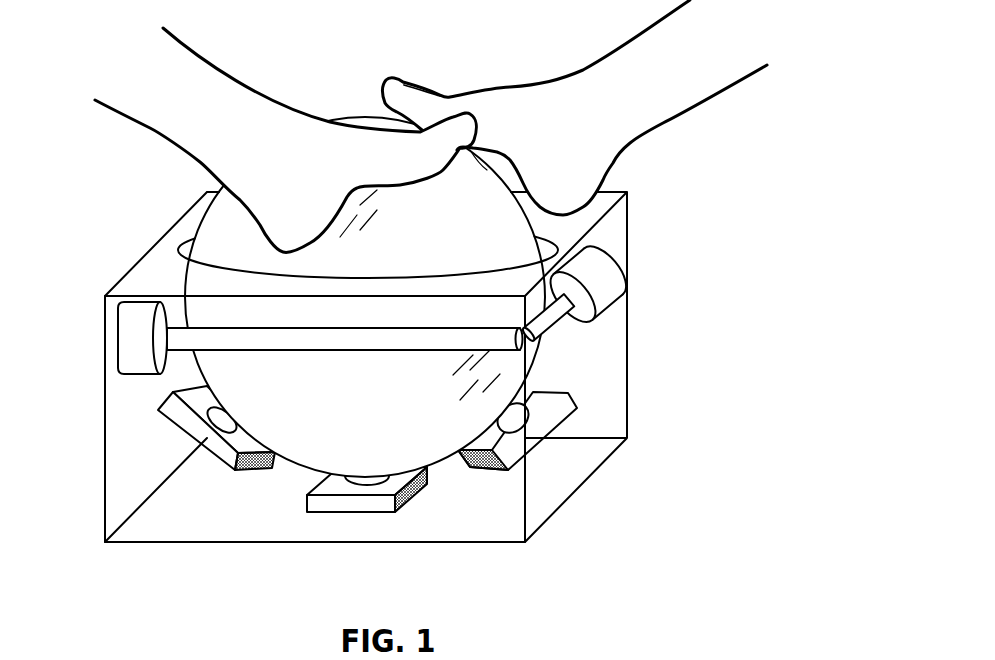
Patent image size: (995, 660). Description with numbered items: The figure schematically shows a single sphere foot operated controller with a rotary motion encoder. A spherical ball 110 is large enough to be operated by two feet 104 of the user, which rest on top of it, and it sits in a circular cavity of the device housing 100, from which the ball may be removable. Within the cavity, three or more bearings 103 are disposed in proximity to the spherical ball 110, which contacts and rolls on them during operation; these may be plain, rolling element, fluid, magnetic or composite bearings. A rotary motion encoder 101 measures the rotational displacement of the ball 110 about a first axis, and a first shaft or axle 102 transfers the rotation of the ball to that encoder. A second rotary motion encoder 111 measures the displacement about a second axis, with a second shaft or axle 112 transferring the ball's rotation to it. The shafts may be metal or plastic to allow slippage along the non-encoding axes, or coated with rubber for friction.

The device housing 100 is at (365, 329).
The rotary motion encoder 101 is at (128, 278).
The first shaft or axle 102 is at (322, 343).
The bearings 103 is at (197, 436).
The feet 104 is at (223, 141).
The spherical ball 110 is at (331, 264).
The second rotary motion encoder 111 is at (610, 266).
The second shaft or axle 112 is at (577, 316).